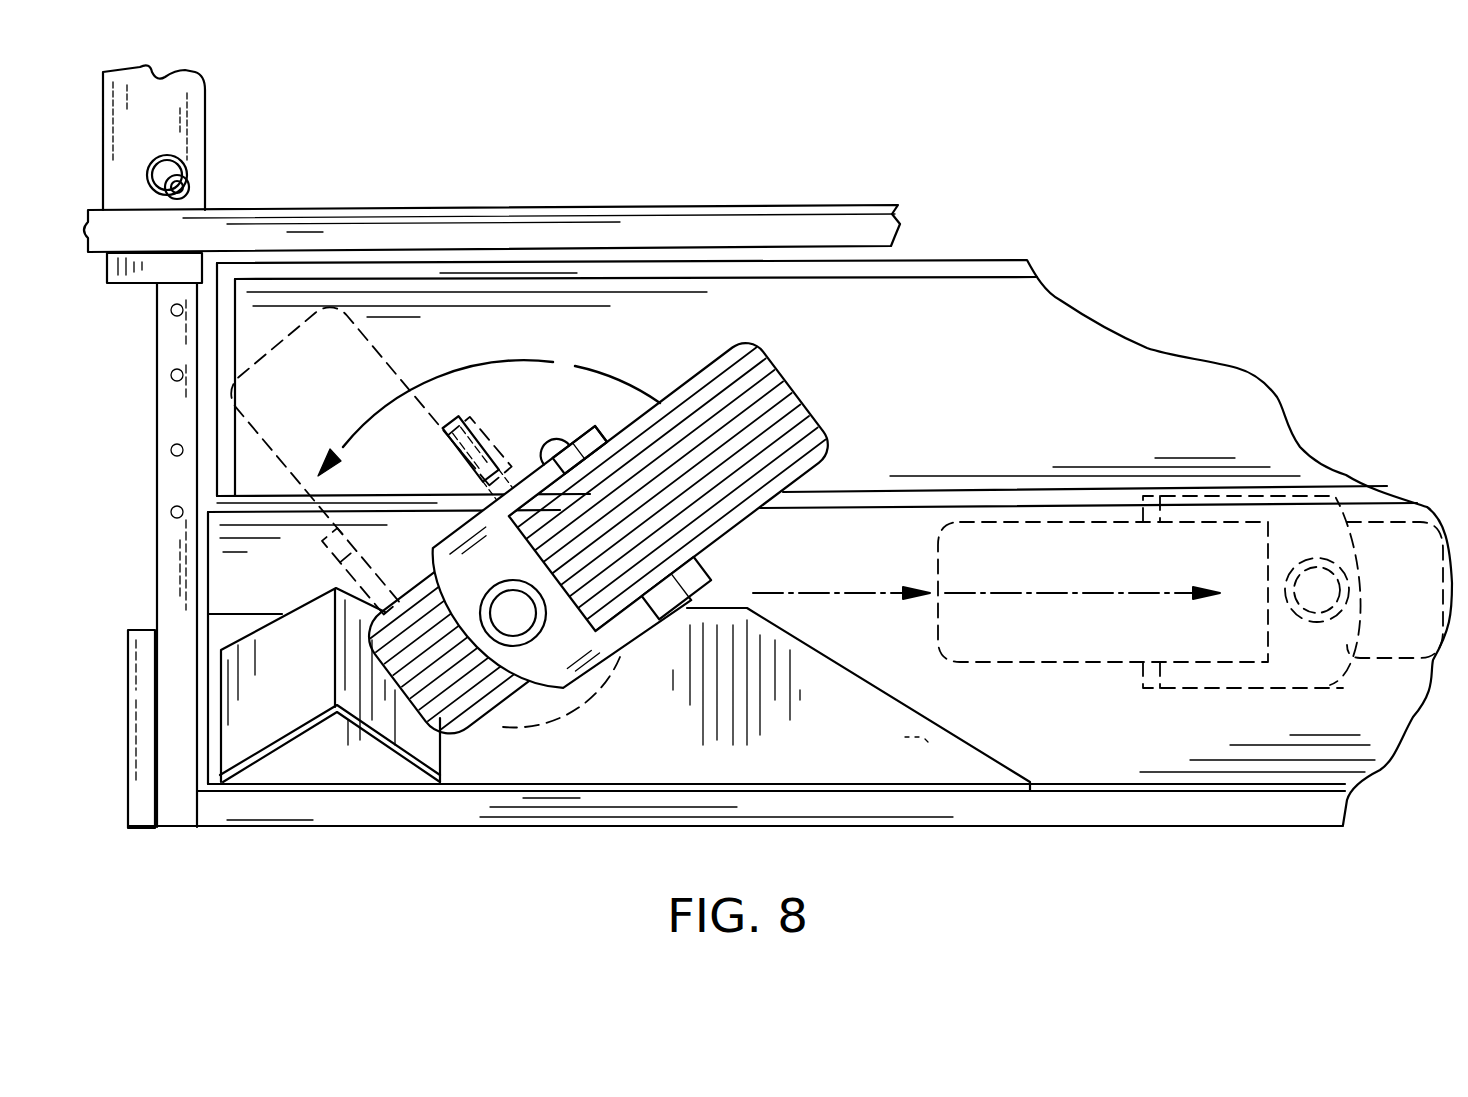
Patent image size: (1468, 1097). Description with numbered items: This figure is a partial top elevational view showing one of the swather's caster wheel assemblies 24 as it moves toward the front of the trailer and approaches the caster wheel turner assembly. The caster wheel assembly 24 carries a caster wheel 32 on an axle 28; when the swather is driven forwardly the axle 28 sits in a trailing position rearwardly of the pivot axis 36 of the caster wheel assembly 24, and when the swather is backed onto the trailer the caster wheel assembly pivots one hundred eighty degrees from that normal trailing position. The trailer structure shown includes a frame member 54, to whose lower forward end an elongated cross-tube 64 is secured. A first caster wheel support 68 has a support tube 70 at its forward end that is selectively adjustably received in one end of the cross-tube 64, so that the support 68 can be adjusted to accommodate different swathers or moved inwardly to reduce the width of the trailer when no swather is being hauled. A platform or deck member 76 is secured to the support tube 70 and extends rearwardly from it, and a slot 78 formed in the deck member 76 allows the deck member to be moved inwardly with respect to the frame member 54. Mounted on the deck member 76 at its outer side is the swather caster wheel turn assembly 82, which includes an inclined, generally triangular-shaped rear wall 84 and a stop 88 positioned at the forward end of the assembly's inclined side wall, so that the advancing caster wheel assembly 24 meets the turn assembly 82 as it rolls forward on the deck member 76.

The caster wheel assembly 24 is at (676, 372).
The axle 28 is at (705, 597).
The caster wheel 32 is at (800, 400).
The pivot axis 36 is at (517, 620).
The frame member 54 is at (992, 807).
The cross-tube 64 is at (212, 148).
The first caster wheel support 68 is at (560, 845).
The support tube 70 is at (175, 768).
The deck member 76 is at (1030, 328).
The slot 78 is at (205, 313).
The swather caster wheel turn assembly 82 is at (895, 684).
The rear wall 84 is at (933, 740).
The stop 88 is at (397, 707).